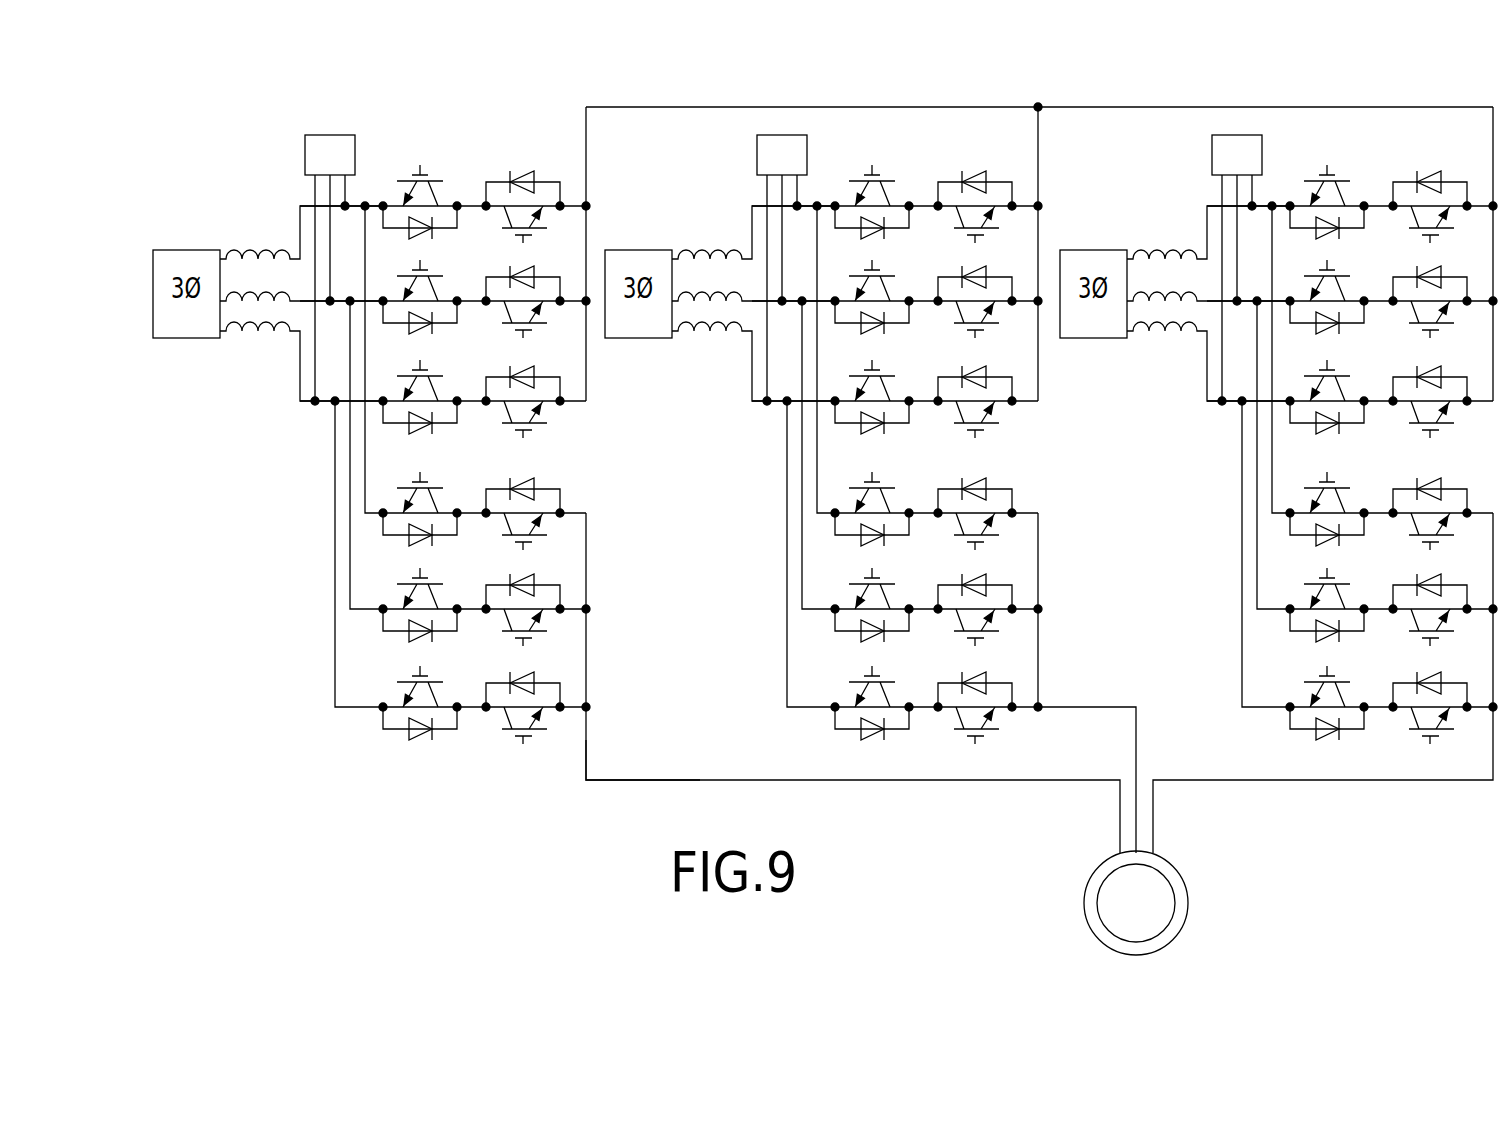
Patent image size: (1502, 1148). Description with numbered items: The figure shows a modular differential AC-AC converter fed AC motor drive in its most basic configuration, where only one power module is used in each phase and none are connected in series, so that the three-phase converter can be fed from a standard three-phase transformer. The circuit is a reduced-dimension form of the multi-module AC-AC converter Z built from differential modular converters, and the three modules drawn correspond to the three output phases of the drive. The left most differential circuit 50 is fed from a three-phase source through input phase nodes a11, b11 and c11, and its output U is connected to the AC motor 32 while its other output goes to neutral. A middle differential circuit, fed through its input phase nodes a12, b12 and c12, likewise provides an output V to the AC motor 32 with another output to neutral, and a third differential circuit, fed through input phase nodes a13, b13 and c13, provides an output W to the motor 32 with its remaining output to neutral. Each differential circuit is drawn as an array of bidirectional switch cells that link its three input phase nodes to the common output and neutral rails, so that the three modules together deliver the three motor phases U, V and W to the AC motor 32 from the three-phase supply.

The left most differential circuit 50 is at (450, 165).
The AC motor 32 is at (1178, 873).
The input phase a node of first module a11 is at (325, 195).
The input phase b node of first module b11 is at (325, 285).
The input phase c node of first module c11 is at (335, 416).
The input phase a node of second module a12 is at (776, 195).
The input phase b node of second module b12 is at (776, 286).
The input phase c node of second module c12 is at (786, 415).
The input phase a node of third module a13 is at (1231, 195).
The input phase b node of third module b13 is at (1231, 286).
The input phase c node of third module c13 is at (1241, 414).
The output U is at (853, 780).
The output V is at (1087, 763).
The output W is at (1323, 780).
The multi-module AC-AC converter Z is at (543, 776).